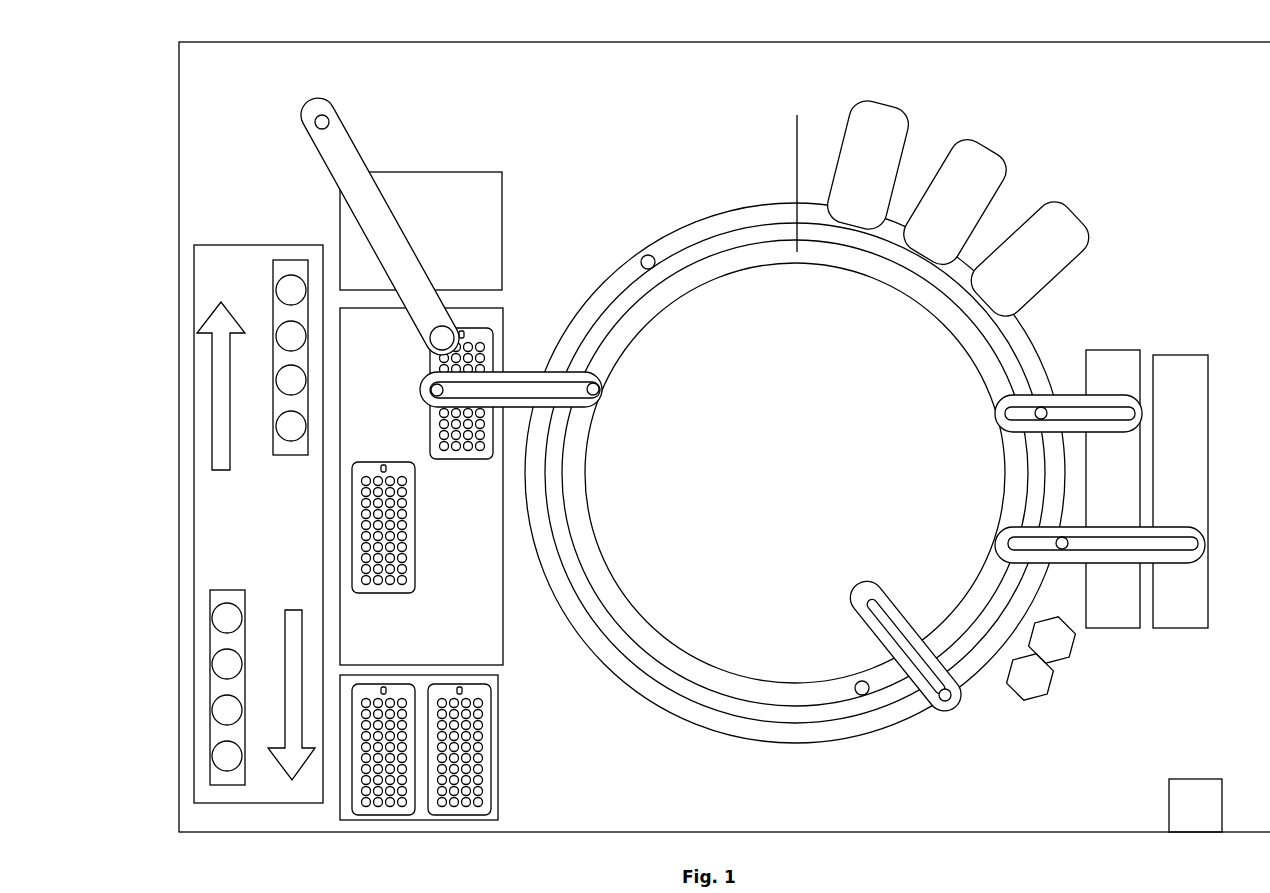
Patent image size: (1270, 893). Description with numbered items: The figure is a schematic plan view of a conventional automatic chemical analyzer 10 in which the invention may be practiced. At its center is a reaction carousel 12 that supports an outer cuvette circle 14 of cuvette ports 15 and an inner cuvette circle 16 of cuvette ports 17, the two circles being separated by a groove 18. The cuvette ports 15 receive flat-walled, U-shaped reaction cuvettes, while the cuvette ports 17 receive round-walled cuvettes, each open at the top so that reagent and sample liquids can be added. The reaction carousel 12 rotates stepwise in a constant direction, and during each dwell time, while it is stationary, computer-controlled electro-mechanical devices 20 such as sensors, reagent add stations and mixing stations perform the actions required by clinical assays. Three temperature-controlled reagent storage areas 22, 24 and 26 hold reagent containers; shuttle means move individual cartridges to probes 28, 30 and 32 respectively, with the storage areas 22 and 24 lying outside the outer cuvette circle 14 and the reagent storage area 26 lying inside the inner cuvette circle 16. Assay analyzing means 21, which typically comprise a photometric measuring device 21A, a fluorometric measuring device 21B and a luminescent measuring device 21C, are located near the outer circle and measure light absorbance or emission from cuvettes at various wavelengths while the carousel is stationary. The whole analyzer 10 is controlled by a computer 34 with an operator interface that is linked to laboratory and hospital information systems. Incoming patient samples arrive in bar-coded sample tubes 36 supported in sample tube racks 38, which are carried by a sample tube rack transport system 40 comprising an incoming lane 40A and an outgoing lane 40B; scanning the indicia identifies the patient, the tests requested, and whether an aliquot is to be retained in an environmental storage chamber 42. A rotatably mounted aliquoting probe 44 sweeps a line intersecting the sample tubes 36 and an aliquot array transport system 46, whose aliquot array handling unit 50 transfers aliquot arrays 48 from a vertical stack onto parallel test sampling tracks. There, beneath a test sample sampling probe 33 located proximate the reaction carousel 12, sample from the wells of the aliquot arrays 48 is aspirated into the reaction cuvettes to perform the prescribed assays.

The automatic chemical analyzer 10 is at (178, 62).
The reaction carousel 12 is at (795, 403).
The outer cuvette circle 14 is at (748, 215).
The cuvette ports 15 is at (650, 270).
The inner cuvette circle 16 is at (797, 174).
The cuvette ports 17 is at (862, 696).
The groove 18 is at (733, 240).
The electro-mechanical devices 20 is at (1062, 674).
The assay analyzing means 21 is at (960, 194).
The photometric measuring device 21A is at (868, 165).
The fluorometric measuring device 21B is at (955, 202).
The luminescent measuring device 21C is at (1030, 258).
The reagent storage area 22 is at (1183, 628).
The reagent storage area 24 is at (1120, 628).
The reagent storage area 26 is at (795, 473).
The probe 28 is at (1062, 540).
The probe 30 is at (1050, 385).
The probe 32 is at (945, 703).
The test sample sampling probe 33 is at (601, 400).
The computer 34 is at (1195, 805).
The sample tubes 36 is at (229, 620).
The sample tube racks 38 is at (245, 784).
The sample tube rack transport system 40 is at (200, 621).
The incoming lane 40A is at (220, 403).
The outgoing lane 40B is at (293, 655).
The environmental storage chamber 42 is at (452, 171).
The aliquoting probe 44 is at (360, 162).
The aliquot array transport system 46 is at (357, 333).
The aliquot arrays 48 is at (484, 332).
The aliquot array handling unit 50 is at (500, 812).